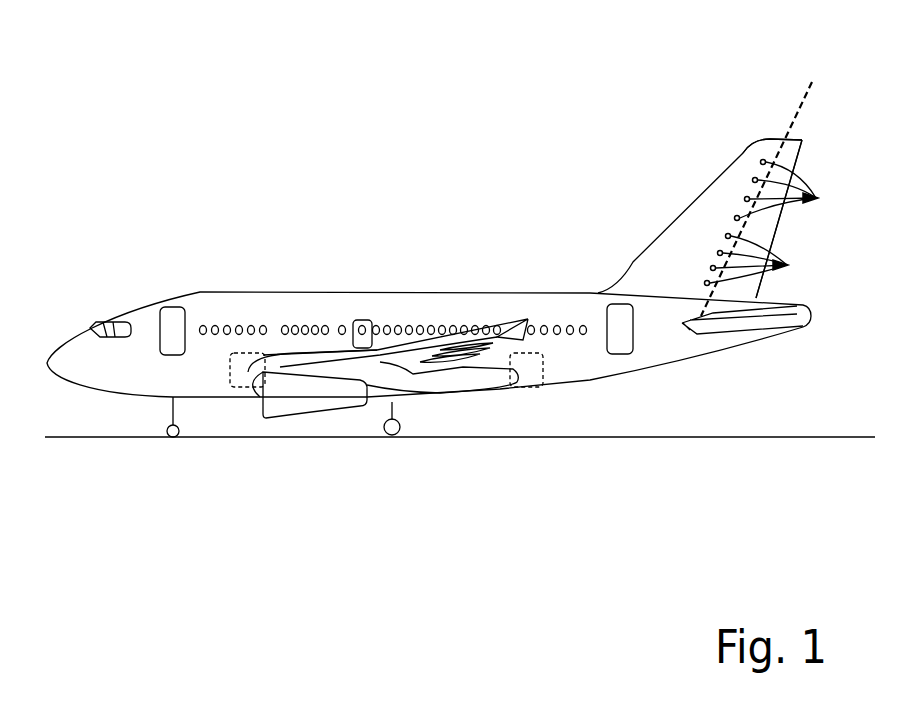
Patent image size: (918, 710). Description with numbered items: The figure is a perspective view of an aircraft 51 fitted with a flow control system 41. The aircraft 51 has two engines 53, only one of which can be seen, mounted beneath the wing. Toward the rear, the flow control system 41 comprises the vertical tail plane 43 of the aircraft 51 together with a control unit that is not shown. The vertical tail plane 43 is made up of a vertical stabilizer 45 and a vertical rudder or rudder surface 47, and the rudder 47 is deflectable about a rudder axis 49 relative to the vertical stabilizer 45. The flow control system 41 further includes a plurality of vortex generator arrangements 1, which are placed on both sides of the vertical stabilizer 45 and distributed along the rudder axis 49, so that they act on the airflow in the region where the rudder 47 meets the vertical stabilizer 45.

The vortex generator arrangement 1 is at (788, 265).
The flow control system 41 is at (643, 237).
The vertical tail plane 43 is at (702, 158).
The vertical stabilizer 45 is at (695, 281).
The rudder 47 is at (802, 140).
The rudder axis 49 is at (807, 98).
The aircraft 51 is at (287, 258).
The engine 53 is at (302, 408).